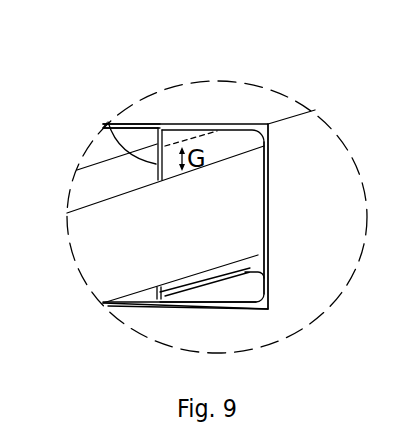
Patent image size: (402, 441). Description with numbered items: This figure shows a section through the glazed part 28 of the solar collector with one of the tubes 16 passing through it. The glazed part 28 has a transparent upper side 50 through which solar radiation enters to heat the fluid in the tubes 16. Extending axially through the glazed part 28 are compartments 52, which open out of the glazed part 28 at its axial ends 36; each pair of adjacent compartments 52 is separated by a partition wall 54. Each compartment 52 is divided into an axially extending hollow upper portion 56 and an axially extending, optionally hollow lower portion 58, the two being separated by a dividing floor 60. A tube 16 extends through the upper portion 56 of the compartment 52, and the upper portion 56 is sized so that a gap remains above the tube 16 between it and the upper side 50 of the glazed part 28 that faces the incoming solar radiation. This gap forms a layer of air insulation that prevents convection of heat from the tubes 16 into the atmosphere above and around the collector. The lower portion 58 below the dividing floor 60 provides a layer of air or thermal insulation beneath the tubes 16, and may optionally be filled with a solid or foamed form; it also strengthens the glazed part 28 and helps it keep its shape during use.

The tube 16 is at (97, 220).
The glazed part 28 is at (235, 97).
The axial end 36 is at (110, 113).
The transparent upper side 50 is at (263, 110).
The compartment 52 is at (247, 164).
The partition wall 54 is at (156, 166).
The hollow upper portion 56 is at (173, 137).
The lower portion 58 is at (239, 288).
The dividing floor 60 is at (258, 263).